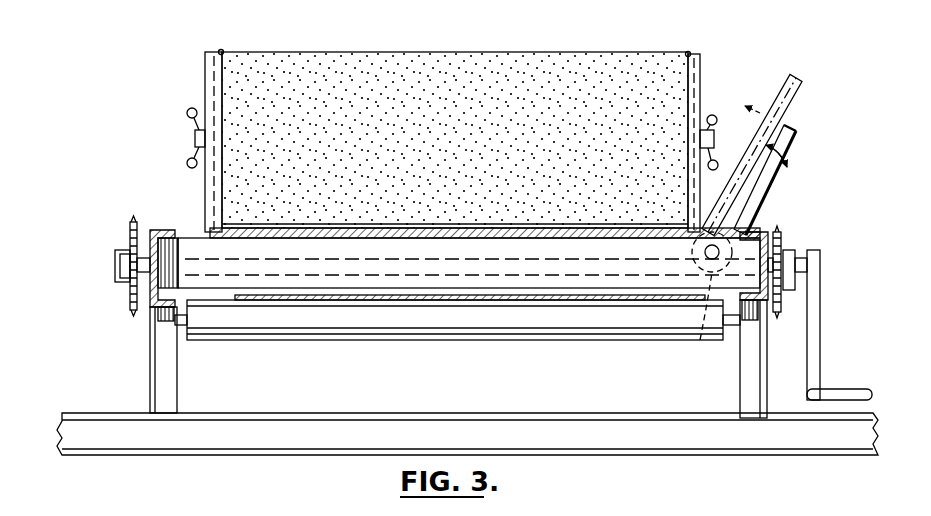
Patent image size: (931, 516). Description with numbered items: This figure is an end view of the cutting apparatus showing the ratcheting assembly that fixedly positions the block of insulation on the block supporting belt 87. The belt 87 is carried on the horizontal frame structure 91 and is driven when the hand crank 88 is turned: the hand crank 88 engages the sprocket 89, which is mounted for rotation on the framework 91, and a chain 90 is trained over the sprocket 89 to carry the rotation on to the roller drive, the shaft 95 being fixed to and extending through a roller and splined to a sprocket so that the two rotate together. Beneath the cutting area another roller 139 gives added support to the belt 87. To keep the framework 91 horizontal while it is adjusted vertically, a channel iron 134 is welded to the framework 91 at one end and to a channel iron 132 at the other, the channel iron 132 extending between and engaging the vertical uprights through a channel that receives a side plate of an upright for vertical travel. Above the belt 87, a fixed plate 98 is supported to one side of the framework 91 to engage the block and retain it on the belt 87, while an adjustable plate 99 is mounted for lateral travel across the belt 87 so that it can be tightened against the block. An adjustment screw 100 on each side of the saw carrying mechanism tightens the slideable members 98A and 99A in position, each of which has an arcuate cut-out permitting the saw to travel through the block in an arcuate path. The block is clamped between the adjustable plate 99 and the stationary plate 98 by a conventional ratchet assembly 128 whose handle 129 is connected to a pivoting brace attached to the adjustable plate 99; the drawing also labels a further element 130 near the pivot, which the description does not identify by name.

The block supporting belt 87 is at (305, 226).
The hand crank 88 is at (820, 347).
The sprocket 89 is at (790, 250).
The chain 90 is at (780, 235).
The horizontal frame structure 91 is at (752, 233).
The shaft 95 is at (506, 263).
The fixed plate 98 is at (208, 52).
The slideable member 98A is at (223, 51).
The adjustable plate 99 is at (702, 58).
The slideable member 99A is at (684, 52).
The adjustment screw 100 is at (190, 108).
The ratchet assembly 128 is at (803, 142).
The handle 129 is at (786, 148).
The pivot 130 is at (700, 340).
The channel iron 132 is at (533, 434).
The channel iron 134 is at (162, 369).
The roller 139 is at (420, 325).